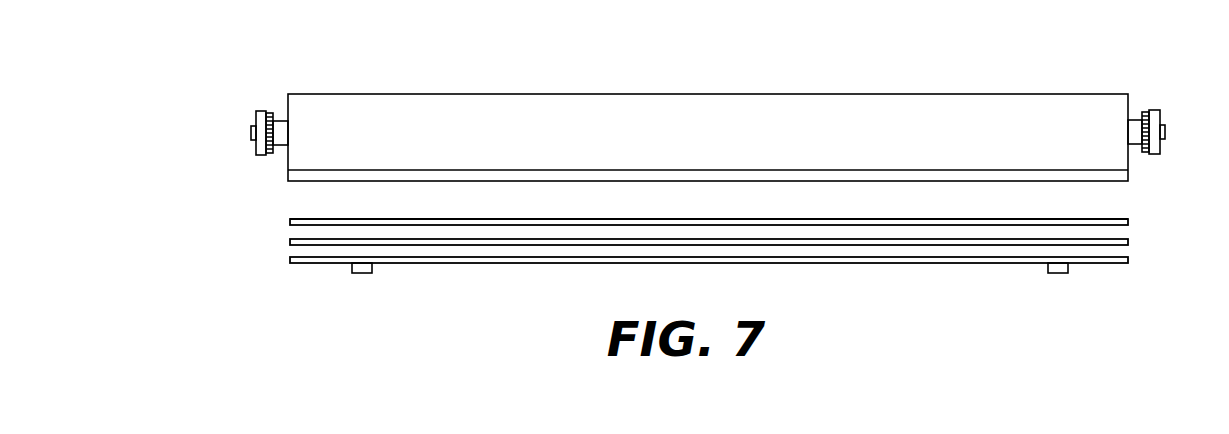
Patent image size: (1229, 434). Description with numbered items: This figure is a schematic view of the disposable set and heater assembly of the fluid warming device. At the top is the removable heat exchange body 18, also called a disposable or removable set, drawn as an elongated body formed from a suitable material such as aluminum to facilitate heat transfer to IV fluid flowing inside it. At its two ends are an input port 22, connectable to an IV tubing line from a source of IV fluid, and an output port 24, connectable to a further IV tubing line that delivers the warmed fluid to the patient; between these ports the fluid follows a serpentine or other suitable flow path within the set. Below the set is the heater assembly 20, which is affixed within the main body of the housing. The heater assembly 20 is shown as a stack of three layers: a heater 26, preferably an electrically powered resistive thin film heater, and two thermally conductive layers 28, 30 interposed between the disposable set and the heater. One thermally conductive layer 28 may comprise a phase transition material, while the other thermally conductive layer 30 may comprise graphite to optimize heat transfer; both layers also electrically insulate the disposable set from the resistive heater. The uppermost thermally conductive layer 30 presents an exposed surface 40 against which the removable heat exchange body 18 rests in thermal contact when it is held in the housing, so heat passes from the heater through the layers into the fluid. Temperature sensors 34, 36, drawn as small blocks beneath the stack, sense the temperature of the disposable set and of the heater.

The removable heat exchange body 18 is at (450, 94).
The heater assembly 20 is at (711, 253).
The input port 22 is at (272, 112).
The output port 24 is at (1158, 110).
The heater 26 is at (1130, 261).
The thermally conductive layer 28 is at (1130, 241).
The thermally conductive layer 30 is at (1130, 221).
The temperature sensor 34 is at (360, 274).
The temperature sensor 36 is at (1056, 274).
The exposed surface 40 is at (716, 219).